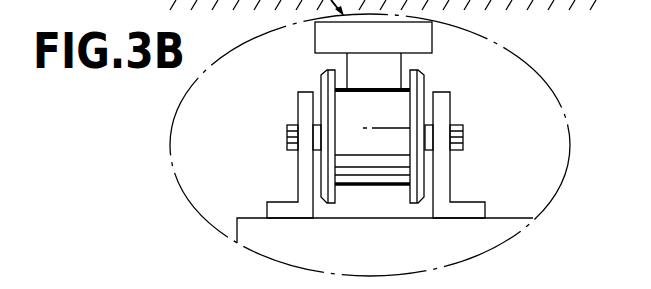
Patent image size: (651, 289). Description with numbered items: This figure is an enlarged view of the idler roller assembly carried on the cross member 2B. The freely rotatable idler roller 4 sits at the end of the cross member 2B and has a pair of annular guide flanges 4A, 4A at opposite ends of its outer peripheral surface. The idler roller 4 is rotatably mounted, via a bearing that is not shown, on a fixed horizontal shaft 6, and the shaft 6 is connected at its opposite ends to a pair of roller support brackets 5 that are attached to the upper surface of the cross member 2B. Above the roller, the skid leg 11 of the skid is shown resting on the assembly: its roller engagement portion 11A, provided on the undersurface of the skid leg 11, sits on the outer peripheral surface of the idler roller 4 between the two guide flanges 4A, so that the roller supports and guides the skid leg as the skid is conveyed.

The cross member 2B is at (509, 219).
The idler roller 4 is at (368, 206).
The annular guide flange 4A is at (320, 78).
The roller support bracket 5 is at (298, 172).
The fixed horizontal shaft 6 is at (463, 128).
The skid leg 11 is at (326, 37).
The roller engagement portion 11A is at (392, 68).